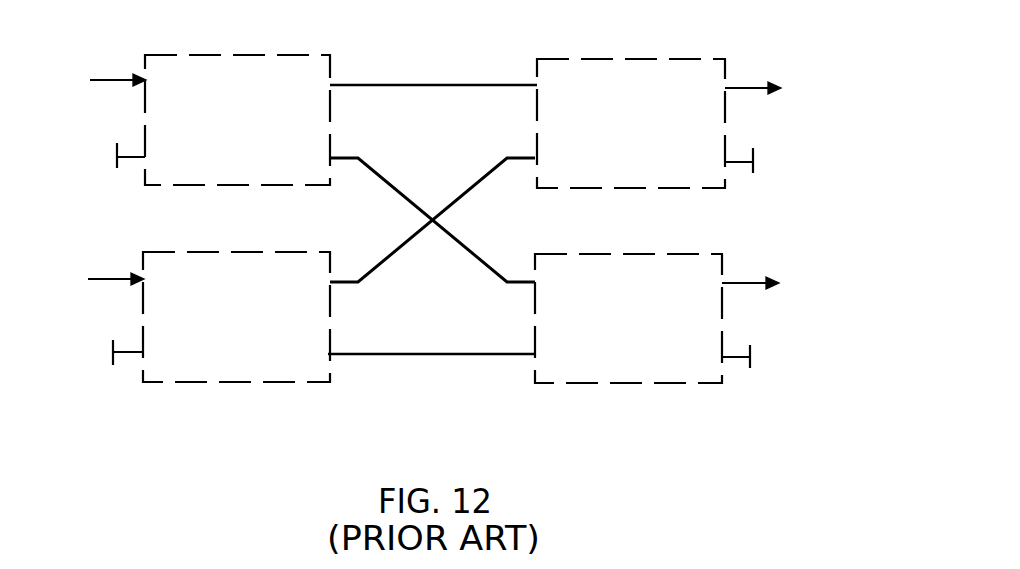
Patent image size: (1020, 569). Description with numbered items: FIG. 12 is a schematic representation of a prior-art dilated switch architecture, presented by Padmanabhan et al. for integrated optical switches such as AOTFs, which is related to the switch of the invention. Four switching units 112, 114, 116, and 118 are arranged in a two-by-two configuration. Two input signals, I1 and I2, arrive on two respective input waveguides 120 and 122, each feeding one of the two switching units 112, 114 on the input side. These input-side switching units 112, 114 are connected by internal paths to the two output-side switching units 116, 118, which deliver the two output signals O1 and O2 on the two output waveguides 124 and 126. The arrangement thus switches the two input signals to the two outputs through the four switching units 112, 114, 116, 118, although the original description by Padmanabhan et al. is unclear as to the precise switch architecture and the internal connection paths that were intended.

The switching unit 112 is at (213, 55).
The switching unit 114 is at (213, 382).
The switching unit 116 is at (630, 60).
The switching unit 118 is at (627, 384).
The input waveguide 120 is at (115, 78).
The input waveguide 122 is at (112, 277).
The output waveguide 124 is at (748, 86).
The output waveguide 126 is at (746, 281).